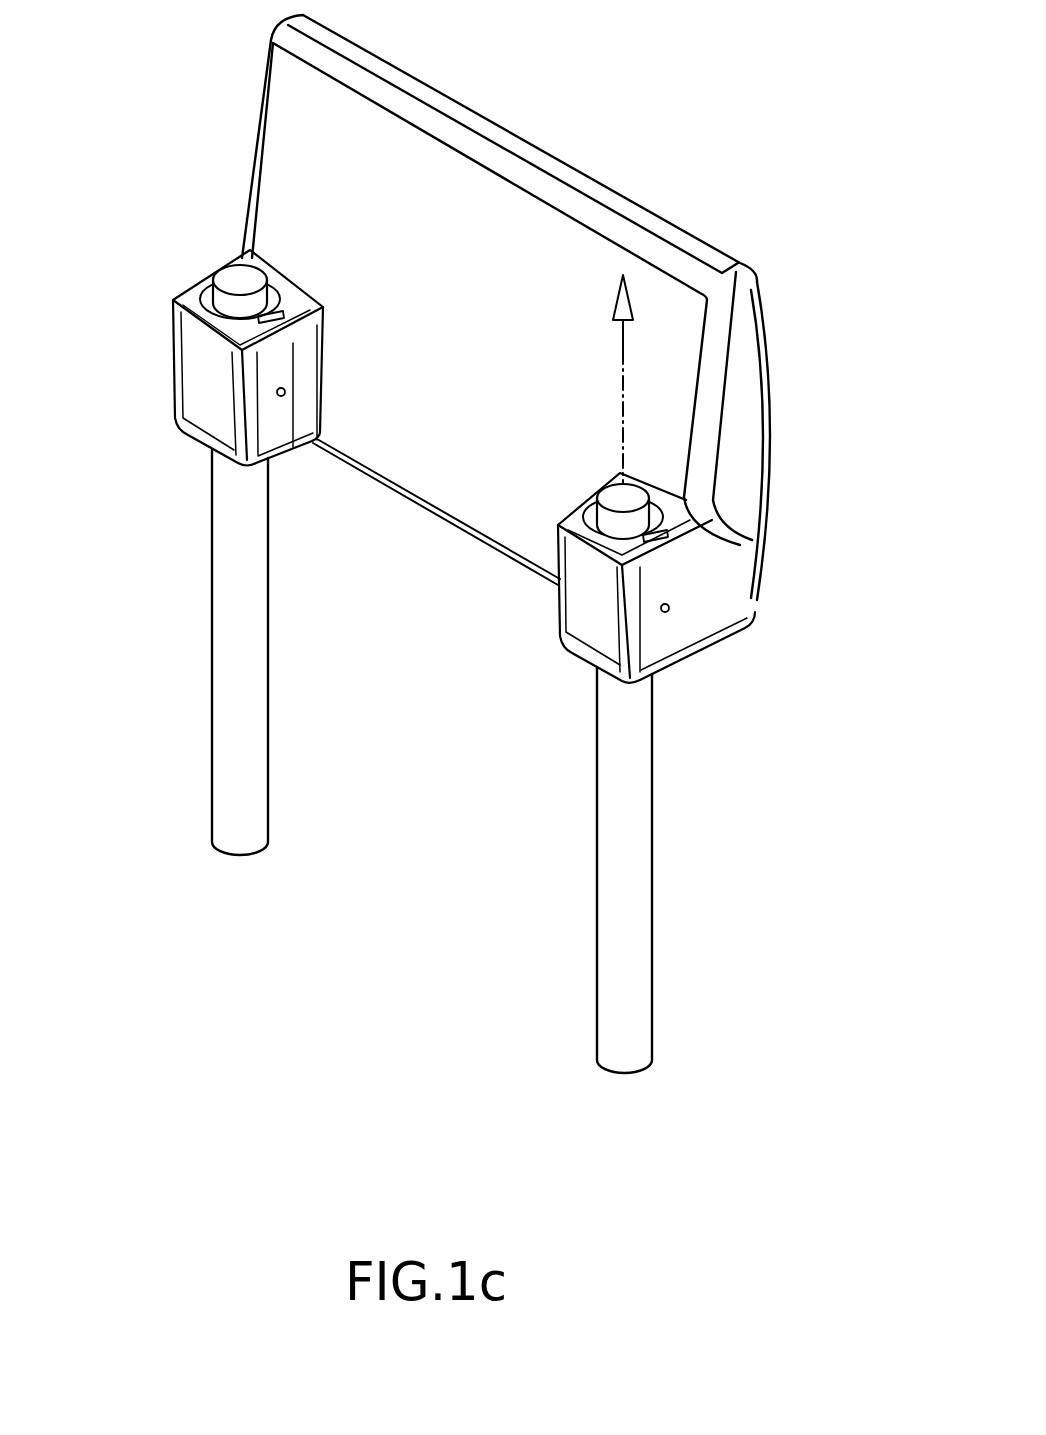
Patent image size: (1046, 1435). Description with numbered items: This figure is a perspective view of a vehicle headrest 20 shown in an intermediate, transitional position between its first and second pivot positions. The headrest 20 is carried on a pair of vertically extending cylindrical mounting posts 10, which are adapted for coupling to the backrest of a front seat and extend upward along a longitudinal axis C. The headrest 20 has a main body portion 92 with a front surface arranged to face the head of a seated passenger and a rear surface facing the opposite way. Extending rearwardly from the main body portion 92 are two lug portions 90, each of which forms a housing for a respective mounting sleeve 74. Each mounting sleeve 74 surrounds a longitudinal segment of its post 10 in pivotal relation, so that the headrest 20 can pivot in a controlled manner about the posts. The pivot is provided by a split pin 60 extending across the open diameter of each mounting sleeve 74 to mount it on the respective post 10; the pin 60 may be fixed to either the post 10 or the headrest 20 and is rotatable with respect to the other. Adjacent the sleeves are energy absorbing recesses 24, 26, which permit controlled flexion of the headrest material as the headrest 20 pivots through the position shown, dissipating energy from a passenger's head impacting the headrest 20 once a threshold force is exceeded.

The headrest 20 is at (778, 181).
The main body portion 92 is at (435, 467).
The longitudinal axis C is at (623, 350).
The lug portion 90 is at (203, 377).
The energy absorbing recess 24 is at (652, 515).
The mounting sleeve 74 is at (214, 290).
The energy absorbing recess 26 is at (654, 537).
The split pin 60 is at (283, 397).
The mounting post 10 is at (243, 737).